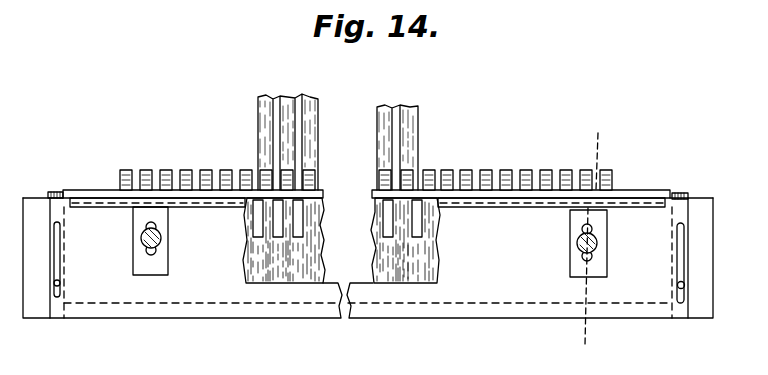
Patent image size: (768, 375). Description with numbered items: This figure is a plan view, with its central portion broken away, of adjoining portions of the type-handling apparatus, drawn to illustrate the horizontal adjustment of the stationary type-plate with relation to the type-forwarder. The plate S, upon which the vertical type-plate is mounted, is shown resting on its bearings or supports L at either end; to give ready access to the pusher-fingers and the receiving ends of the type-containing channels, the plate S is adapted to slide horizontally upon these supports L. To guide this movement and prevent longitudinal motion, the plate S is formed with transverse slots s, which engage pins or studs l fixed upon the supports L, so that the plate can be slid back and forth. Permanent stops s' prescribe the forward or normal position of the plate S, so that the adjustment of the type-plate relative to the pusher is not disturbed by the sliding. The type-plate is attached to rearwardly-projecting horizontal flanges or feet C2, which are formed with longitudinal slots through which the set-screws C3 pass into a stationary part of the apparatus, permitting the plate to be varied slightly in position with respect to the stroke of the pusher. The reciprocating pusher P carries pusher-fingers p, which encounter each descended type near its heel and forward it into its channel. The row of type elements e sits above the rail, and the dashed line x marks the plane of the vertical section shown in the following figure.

The plate S is at (368, 258).
The supports L is at (365, 258).
The transverse slots s is at (369, 262).
The pins or studs l is at (60, 284).
The permanent stops s' is at (373, 186).
The horizontal flanges or feet C2 is at (162, 230).
The set-screws C3 is at (140, 243).
The reciprocating pusher P is at (341, 188).
The pusher-fingers p is at (266, 209).
The type elements e is at (366, 180).
The section line x is at (589, 240).